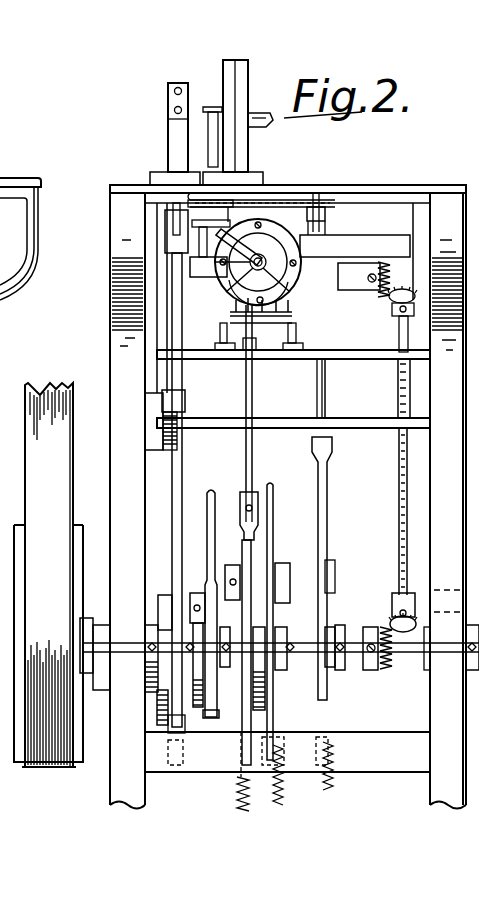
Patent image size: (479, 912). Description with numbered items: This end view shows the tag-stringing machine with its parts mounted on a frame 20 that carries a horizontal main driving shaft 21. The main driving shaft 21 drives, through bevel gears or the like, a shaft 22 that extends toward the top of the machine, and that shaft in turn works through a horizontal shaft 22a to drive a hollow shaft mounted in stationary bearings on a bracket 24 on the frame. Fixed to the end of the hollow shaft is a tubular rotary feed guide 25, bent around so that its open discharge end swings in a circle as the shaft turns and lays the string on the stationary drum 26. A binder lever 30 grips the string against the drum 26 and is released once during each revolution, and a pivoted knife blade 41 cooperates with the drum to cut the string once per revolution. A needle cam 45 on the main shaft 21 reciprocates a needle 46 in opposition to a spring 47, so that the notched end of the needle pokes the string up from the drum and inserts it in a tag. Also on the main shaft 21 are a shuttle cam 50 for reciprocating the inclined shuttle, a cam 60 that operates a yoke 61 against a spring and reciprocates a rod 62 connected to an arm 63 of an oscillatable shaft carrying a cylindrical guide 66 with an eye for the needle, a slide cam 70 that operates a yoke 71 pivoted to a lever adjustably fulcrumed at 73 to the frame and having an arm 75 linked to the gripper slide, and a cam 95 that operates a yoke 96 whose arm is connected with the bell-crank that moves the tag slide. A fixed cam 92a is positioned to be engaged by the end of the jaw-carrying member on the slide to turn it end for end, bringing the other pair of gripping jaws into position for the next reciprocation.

The frame 20 is at (447, 785).
The horizontal main driving shaft 21 is at (103, 665).
The shaft 22 is at (400, 516).
The horizontal shaft 22a is at (192, 281).
The bracket 24 is at (283, 280).
The tubular rotary feed guide 25 is at (219, 236).
The stationary drum 26 is at (318, 258).
The binder lever 30 is at (240, 298).
The pivoted knife blade 41 is at (287, 298).
The needle cam 45 is at (240, 670).
The needle 46 is at (266, 467).
The spring 47 is at (236, 800).
The shuttle cam 50 is at (268, 724).
The cam 60 is at (330, 600).
The yoke 61 is at (319, 606).
The rod 62 is at (318, 386).
The arm 63 is at (326, 222).
The cylindrical guide 66 is at (273, 193).
The slide cam 70 is at (145, 733).
The yoke 71 is at (177, 558).
The adjustable fulcrum 73 is at (186, 403).
The arm 75 is at (180, 320).
The fixed cam 92a is at (255, 124).
The cam 95 is at (203, 603).
The yoke 96 is at (212, 718).